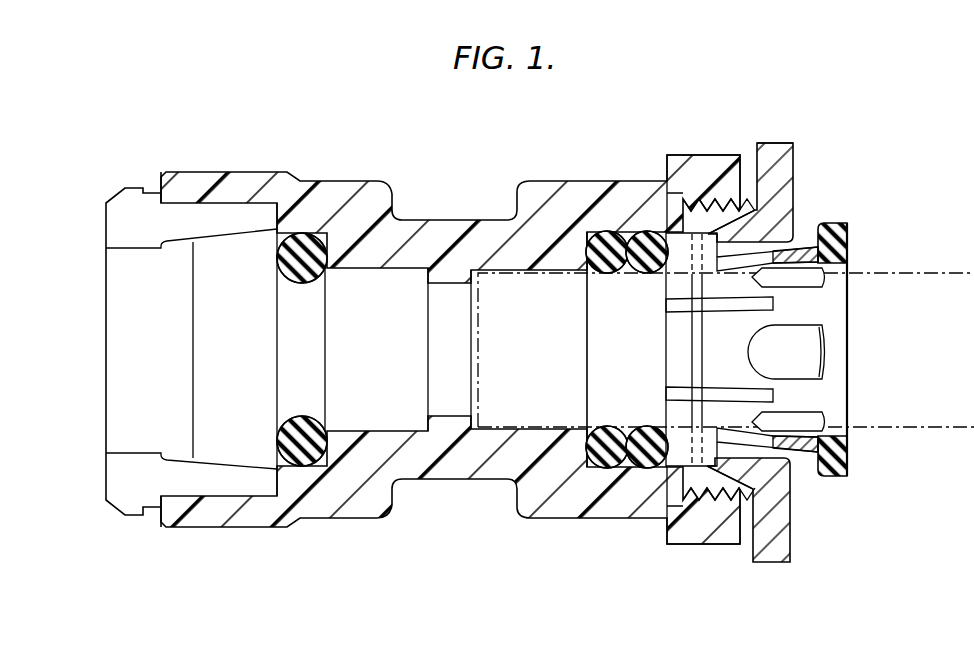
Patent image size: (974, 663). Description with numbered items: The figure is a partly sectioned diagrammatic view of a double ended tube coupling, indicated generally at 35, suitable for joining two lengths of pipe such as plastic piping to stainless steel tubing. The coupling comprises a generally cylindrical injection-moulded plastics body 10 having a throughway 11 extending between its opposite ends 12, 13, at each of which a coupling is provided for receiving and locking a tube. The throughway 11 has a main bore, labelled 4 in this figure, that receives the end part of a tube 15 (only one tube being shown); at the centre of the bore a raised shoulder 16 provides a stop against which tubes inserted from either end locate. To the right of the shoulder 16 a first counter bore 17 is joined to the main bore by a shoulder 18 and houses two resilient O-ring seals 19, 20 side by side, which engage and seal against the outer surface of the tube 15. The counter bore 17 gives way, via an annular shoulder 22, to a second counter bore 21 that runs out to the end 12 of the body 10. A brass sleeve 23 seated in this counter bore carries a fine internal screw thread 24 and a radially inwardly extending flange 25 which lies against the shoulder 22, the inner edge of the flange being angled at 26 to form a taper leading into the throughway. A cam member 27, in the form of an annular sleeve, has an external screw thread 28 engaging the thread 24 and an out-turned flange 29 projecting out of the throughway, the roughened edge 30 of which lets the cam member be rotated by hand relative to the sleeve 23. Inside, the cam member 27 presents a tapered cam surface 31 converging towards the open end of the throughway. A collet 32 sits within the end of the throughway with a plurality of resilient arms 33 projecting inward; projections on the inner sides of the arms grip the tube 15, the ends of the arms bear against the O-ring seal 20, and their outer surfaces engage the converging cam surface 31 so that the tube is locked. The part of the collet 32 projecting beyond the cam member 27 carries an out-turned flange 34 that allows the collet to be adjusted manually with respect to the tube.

The body bore 4 is at (490, 431).
The body 10 is at (440, 222).
The throughway 11 is at (447, 371).
The end of the body 12 is at (742, 156).
The end of the body 13 is at (158, 190).
The tube 15 is at (973, 273).
The raised shoulder 16 is at (445, 282).
The first counter bore 17 is at (629, 232).
The shoulder 18 is at (585, 243).
The O-ring seal 19 is at (600, 462).
The O-ring seal 20 is at (643, 460).
The second counter bore 21 is at (693, 198).
The annular shoulder 22 is at (662, 208).
The sleeve 23 is at (700, 501).
The internal screw thread 24 is at (733, 500).
The radially inwardly extending flange 25 is at (667, 485).
The angled inner edge 26 is at (676, 450).
The cam member 27 is at (733, 470).
The external screw thread 28 is at (724, 487).
The out-turned flange 29 is at (788, 160).
The roughened edge 30 is at (779, 142).
The tapered cam surface 31 is at (752, 226).
The collet 32 is at (842, 304).
The resilient arms 33 is at (670, 326).
The out-turned flange 34 is at (822, 222).
The coupling assembly 35 is at (88, 181).